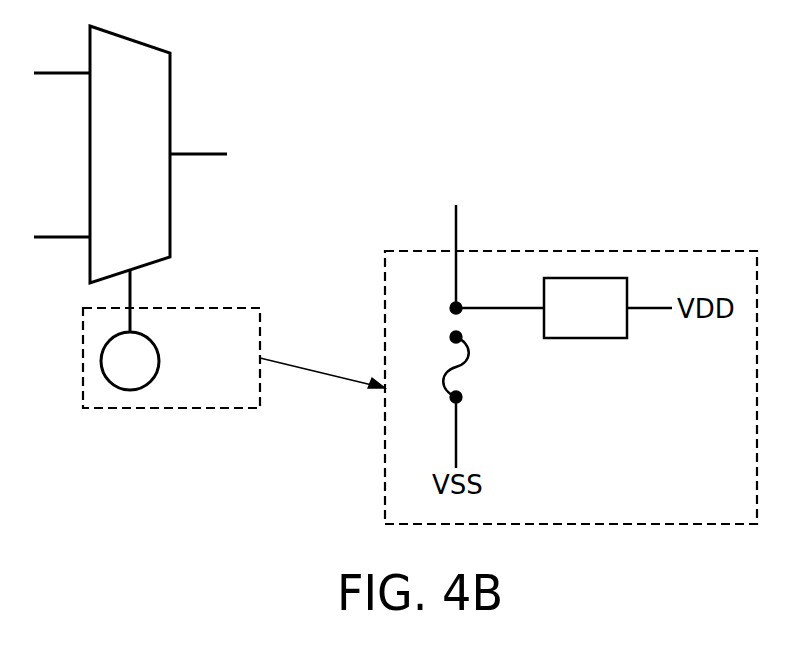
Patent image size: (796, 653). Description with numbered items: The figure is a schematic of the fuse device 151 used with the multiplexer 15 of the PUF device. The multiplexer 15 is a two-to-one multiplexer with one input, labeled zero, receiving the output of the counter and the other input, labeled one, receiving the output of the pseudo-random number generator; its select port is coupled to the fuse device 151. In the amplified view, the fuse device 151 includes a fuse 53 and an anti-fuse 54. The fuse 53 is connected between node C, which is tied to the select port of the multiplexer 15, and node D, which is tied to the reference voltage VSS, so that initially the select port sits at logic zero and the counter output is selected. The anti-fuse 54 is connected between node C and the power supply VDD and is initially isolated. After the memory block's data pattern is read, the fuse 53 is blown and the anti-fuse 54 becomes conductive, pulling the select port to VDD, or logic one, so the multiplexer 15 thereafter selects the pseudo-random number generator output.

The multiplexer 15 is at (172, 88).
The fuse device 151 is at (160, 361).
The fuse 53 is at (472, 379).
The anti-fuse 54 is at (564, 308).